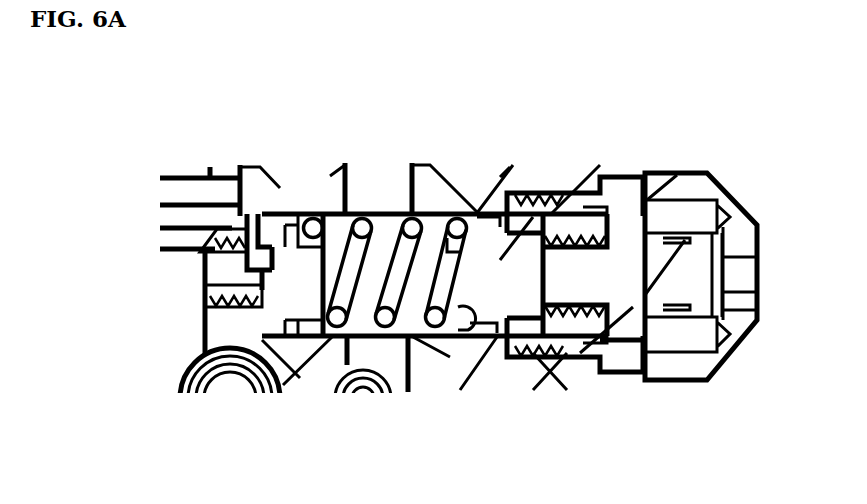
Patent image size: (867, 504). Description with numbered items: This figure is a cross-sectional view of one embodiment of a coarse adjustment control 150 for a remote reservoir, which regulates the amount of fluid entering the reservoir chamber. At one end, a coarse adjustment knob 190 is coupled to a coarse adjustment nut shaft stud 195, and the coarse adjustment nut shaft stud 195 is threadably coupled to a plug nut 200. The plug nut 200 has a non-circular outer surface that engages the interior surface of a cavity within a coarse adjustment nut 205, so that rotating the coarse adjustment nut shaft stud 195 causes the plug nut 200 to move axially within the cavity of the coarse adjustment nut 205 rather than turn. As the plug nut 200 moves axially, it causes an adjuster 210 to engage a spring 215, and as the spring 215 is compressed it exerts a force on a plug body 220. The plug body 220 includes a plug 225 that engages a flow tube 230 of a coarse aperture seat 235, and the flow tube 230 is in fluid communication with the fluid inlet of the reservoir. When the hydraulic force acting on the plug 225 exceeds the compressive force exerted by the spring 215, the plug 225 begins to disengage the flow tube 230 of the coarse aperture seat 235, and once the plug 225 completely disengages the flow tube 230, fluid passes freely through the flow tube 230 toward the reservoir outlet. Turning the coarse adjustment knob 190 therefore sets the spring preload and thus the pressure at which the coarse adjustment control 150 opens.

The coarse adjustment control 150 is at (205, 126).
The coarse adjustment knob 190 is at (707, 172).
The coarse adjustment nut shaft stud 195 is at (632, 345).
The plug nut 200 is at (533, 363).
The coarse adjustment nut 205 is at (620, 203).
The adjuster 210 is at (507, 193).
The spring 215 is at (363, 215).
The plug body 220 is at (333, 200).
The plug 225 is at (250, 232).
The flow tube 230 is at (181, 340).
The coarse aperture seat 235 is at (286, 340).